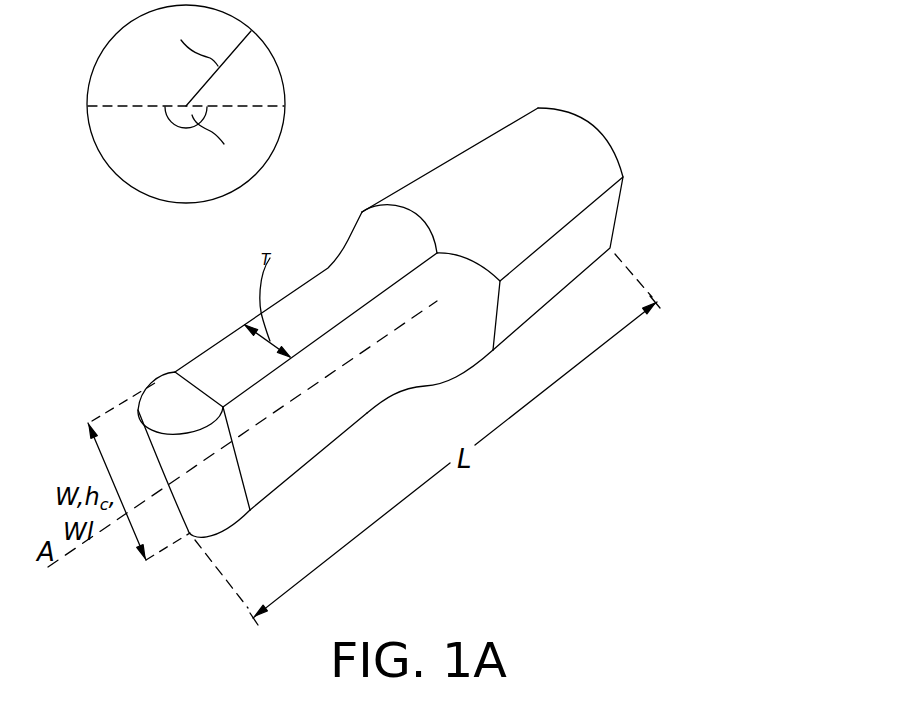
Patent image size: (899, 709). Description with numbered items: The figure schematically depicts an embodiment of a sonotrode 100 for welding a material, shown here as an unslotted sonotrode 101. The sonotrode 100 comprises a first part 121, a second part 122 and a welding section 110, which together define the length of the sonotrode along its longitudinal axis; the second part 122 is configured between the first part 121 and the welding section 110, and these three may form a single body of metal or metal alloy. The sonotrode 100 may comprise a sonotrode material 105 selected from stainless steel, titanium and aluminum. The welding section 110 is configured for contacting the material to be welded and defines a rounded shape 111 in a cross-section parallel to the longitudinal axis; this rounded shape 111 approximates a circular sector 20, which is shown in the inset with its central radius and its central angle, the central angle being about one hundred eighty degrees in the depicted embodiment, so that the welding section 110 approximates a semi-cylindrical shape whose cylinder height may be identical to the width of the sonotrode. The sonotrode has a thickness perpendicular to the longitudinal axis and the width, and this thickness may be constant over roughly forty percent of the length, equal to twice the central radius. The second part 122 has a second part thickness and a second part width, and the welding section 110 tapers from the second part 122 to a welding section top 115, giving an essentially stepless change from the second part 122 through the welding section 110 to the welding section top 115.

The circular sector 20 is at (186, 104).
The sonotrode 100 is at (377, 342).
The unslotted sonotrode 101 is at (377, 342).
The sonotrode material 105 is at (356, 405).
The welding section 110 is at (255, 323).
The rounded shape 111 is at (180, 403).
The welding section top 115 is at (128, 437).
The first part 121 is at (630, 350).
The second part 122 is at (264, 463).